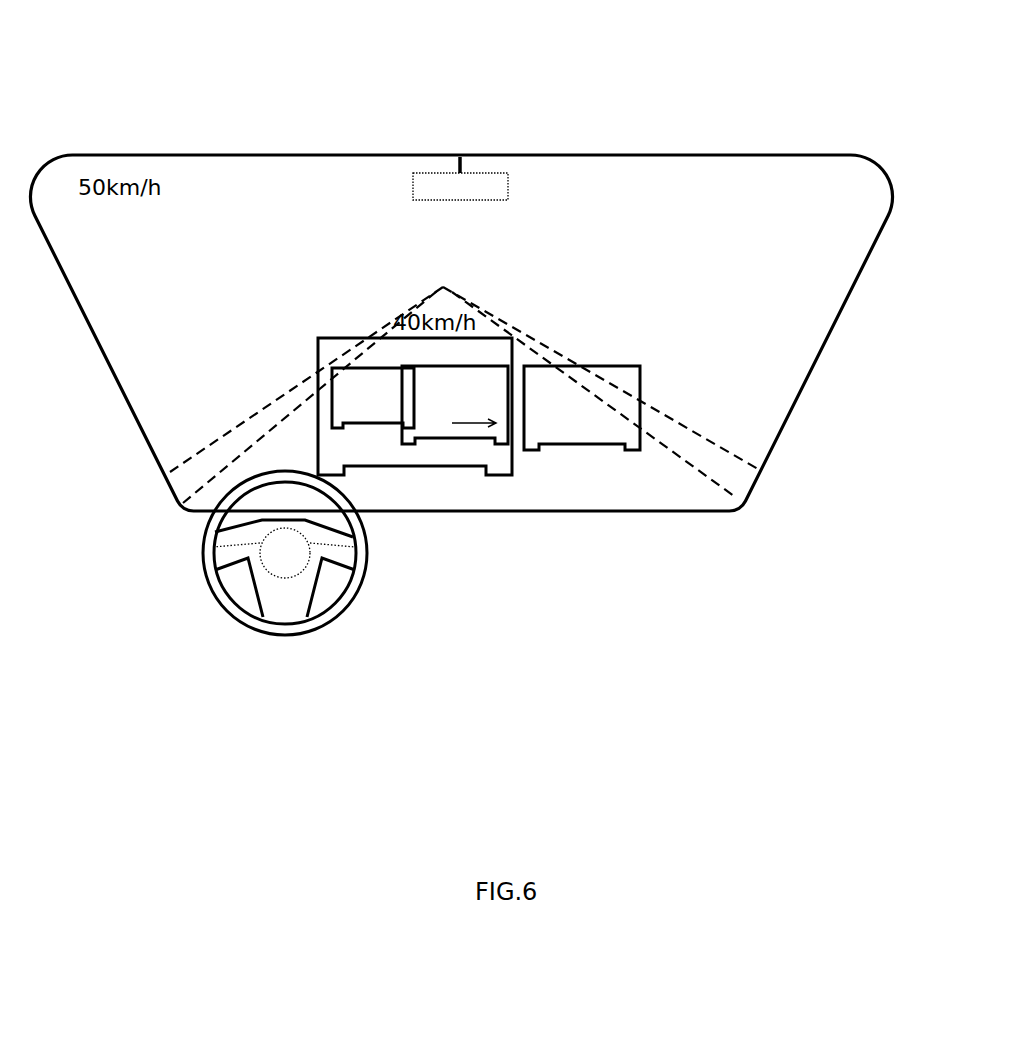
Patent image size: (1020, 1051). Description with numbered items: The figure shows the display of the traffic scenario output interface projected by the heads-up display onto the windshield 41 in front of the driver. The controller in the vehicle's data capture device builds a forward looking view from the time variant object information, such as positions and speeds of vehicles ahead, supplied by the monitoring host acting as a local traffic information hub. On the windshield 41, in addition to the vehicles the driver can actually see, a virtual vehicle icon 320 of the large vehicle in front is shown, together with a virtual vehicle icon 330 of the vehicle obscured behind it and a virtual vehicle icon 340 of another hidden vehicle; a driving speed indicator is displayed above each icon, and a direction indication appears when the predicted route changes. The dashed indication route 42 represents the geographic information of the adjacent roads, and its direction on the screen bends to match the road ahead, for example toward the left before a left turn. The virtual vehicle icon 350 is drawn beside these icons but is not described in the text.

The windshield 41 is at (397, 155).
The indication route 42 is at (705, 473).
The virtual vehicle icon 320 is at (460, 458).
The virtual vehicle icon 330 is at (483, 364).
The virtual vehicle icon 340 is at (367, 380).
The second object display frame 350 is at (640, 368).